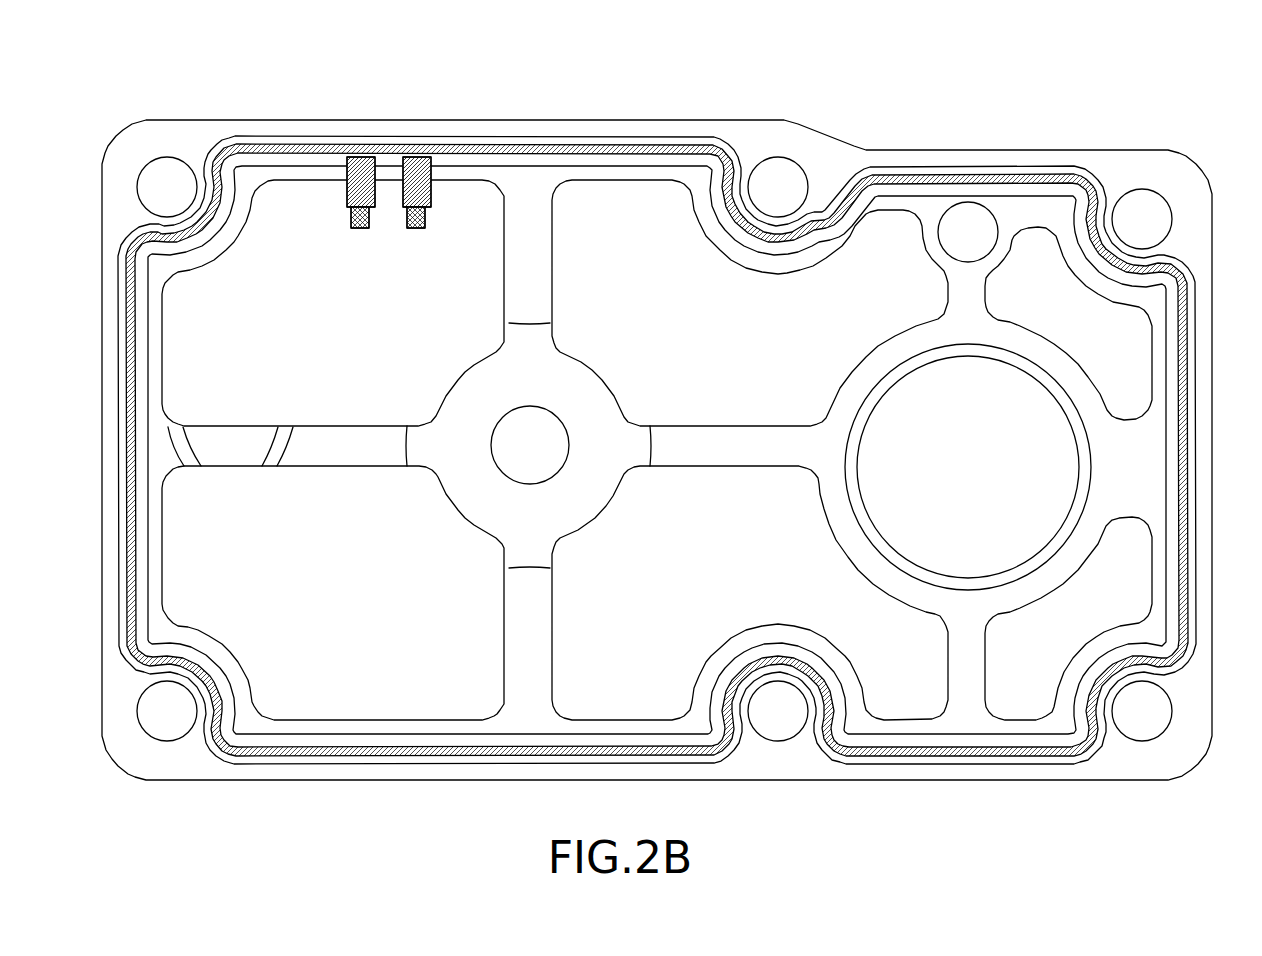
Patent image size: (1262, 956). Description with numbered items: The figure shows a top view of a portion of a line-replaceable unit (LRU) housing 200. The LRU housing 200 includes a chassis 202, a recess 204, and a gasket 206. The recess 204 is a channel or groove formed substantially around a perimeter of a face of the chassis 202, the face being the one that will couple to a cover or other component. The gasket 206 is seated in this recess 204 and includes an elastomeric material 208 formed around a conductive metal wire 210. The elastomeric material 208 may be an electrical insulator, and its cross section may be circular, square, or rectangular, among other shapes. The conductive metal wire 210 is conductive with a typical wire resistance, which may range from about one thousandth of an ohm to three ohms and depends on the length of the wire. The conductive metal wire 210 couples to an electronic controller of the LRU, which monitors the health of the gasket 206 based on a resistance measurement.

The line-replaceable unit (LRU) housing 200 is at (1112, 116).
The chassis 202 is at (1197, 217).
The recess 204 is at (986, 172).
The gasket 206 is at (572, 140).
The elastomeric material 208 is at (418, 150).
The conductive metal wire 210 is at (364, 229).